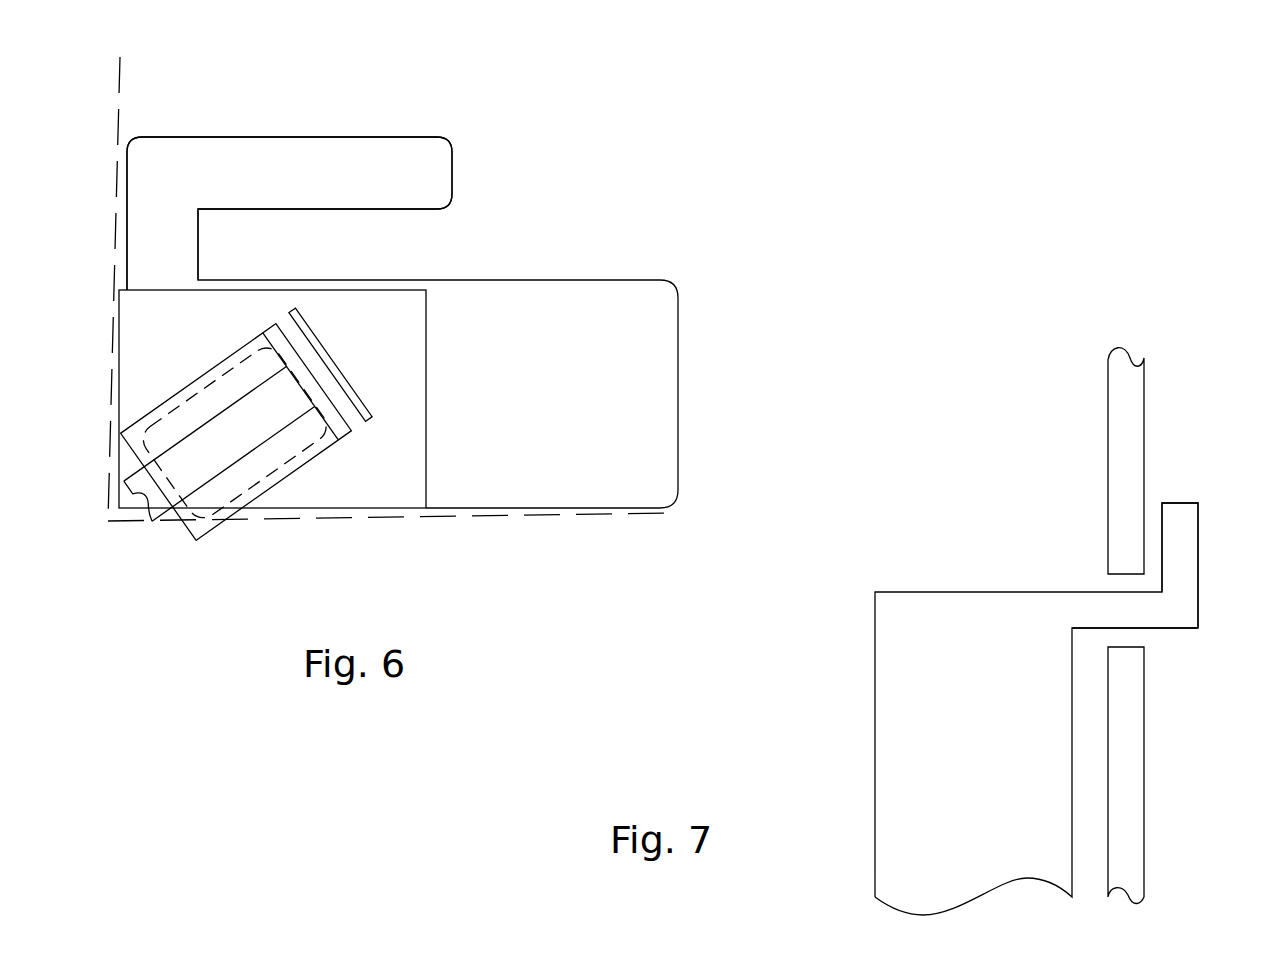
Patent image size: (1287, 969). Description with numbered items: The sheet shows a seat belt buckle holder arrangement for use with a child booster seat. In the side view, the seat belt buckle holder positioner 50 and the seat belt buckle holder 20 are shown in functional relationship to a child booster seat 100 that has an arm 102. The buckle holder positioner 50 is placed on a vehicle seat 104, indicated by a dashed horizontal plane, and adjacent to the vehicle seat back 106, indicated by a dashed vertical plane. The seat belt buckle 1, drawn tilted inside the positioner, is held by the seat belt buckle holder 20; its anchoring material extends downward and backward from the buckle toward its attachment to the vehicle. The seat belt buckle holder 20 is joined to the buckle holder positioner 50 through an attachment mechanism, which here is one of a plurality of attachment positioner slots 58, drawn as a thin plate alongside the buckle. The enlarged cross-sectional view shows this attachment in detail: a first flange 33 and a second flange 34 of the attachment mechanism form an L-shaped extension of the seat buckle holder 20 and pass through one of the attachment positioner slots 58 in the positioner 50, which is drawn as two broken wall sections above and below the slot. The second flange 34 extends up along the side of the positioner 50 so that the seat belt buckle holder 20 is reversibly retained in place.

In FIG. 6, the seat belt buckle 1 is at (226, 439).
In FIG. 6, the seat belt buckle holder 20 is at (228, 519).
In FIG. 7, the seat belt buckle holder 20 is at (876, 678).
In FIG. 7, the first flange 33 is at (1145, 628).
In FIG. 7, the second flange 34 is at (1198, 530).
In FIG. 6, the seat belt buckle holder positioner 50 is at (426, 392).
In FIG. 7, the seat belt buckle holder positioner 50 is at (1144, 407).
In FIG. 6, the attachment positioner slot 58 is at (325, 353).
In FIG. 7, the attachment positioner slot 58 is at (1108, 582).
In FIG. 6, the child booster seat 100 is at (416, 310).
In FIG. 6, the arm 102 is at (452, 162).
In FIG. 6, the vehicle seat 104 is at (497, 513).
In FIG. 6, the vehicle seat back 106 is at (120, 90).